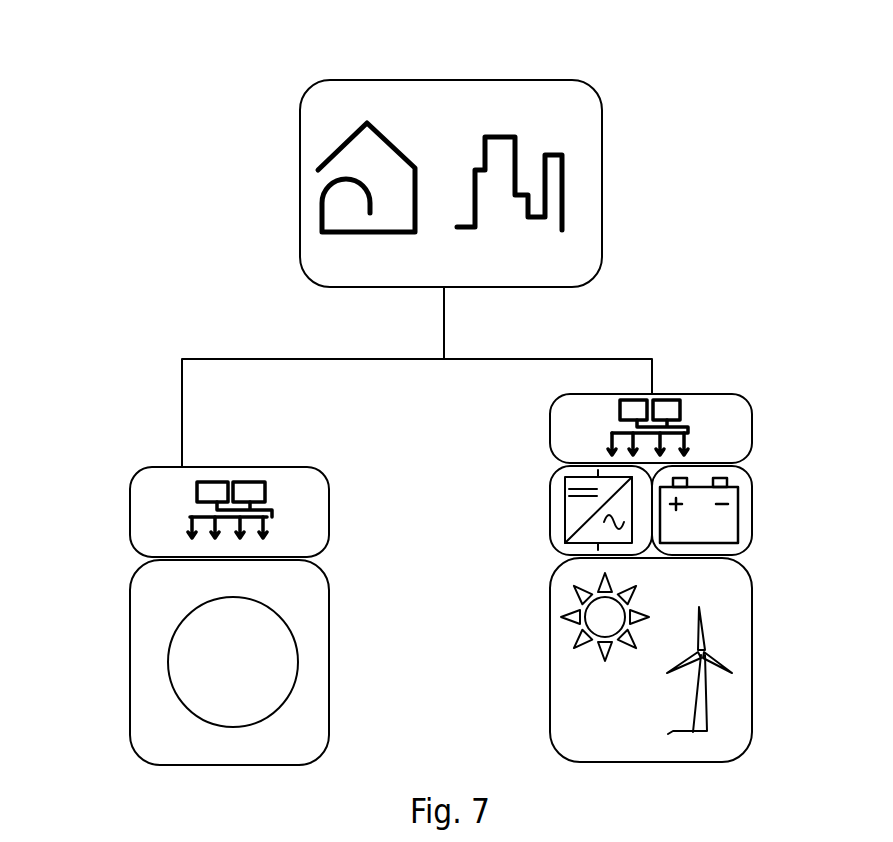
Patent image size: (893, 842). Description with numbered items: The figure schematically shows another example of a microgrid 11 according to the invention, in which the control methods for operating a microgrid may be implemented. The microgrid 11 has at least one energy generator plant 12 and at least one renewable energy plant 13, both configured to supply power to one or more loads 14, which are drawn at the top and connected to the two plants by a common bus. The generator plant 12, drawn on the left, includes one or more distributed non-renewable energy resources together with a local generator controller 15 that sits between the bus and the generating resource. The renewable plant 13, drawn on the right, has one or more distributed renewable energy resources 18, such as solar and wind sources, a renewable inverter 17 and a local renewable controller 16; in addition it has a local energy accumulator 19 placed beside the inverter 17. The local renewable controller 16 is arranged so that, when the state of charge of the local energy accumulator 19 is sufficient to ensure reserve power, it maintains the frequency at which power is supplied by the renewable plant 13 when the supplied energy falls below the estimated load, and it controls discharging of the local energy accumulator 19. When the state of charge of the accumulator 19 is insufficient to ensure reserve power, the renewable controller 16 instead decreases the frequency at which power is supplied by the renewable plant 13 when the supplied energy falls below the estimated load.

The microgrid 11 is at (112, 125).
The energy generator plant 12 is at (112, 366).
The renewable energy plant 13 is at (764, 365).
The loads 14 is at (602, 120).
The local generator controller 15 is at (140, 508).
The local renewable controller 16 is at (730, 448).
The renewable inverter 17 is at (560, 522).
The distributed renewable energy resources 18 is at (717, 692).
The local energy accumulator 19 is at (730, 523).